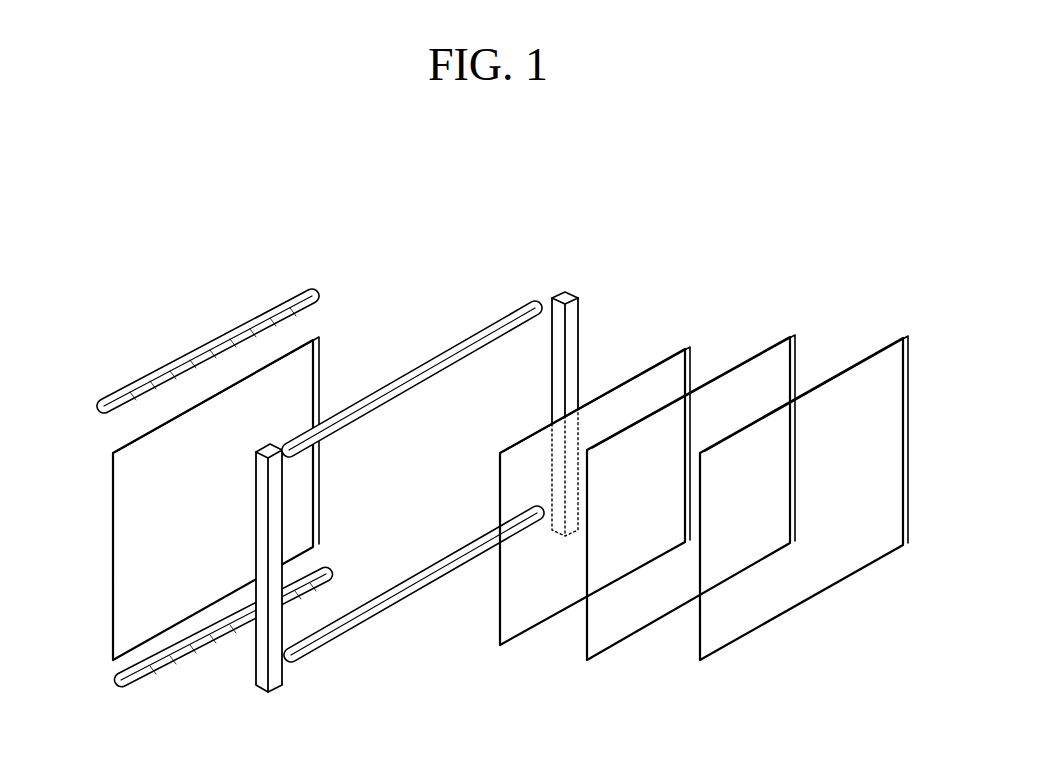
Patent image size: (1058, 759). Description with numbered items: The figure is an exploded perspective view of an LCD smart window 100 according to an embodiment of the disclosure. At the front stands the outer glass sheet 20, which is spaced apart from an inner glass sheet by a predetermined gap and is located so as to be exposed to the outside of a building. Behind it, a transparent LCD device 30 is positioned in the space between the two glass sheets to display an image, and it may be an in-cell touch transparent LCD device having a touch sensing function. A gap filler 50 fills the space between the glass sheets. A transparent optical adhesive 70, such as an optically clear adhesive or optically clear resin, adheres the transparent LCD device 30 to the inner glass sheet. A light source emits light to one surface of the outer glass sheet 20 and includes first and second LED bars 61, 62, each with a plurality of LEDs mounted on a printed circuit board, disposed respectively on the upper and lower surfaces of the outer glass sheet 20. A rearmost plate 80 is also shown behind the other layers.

The LCD smart window 100 is at (444, 254).
The outer glass sheet 20 is at (108, 561).
The transparent LCD device 30 is at (533, 632).
The gap filler 50 is at (373, 614).
The first LED bar 61 is at (196, 348).
The second LED bar 62 is at (176, 670).
The transparent optical adhesive 70 is at (751, 356).
The rear cover 80 is at (846, 368).